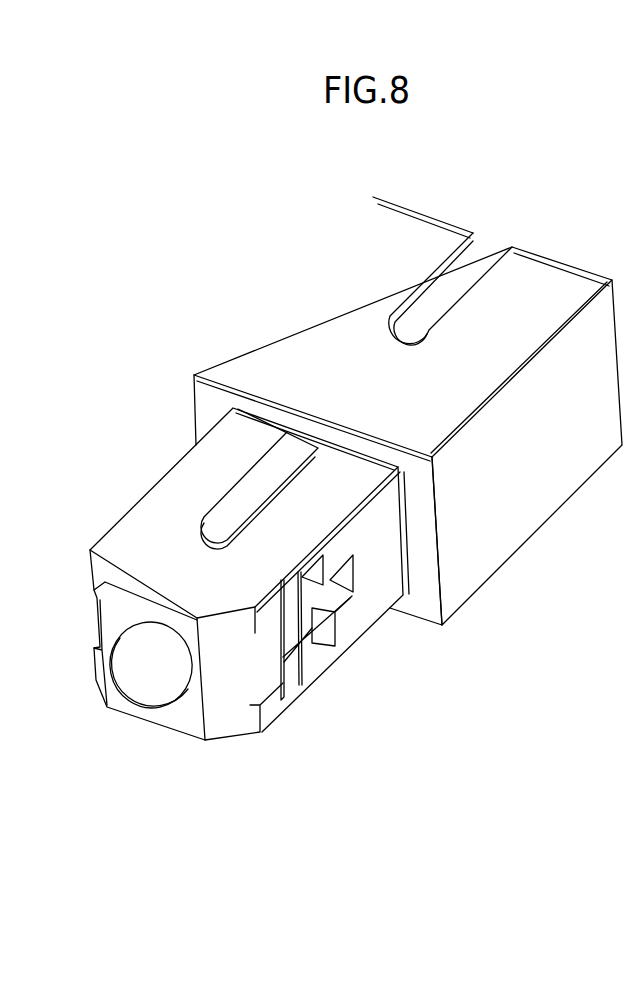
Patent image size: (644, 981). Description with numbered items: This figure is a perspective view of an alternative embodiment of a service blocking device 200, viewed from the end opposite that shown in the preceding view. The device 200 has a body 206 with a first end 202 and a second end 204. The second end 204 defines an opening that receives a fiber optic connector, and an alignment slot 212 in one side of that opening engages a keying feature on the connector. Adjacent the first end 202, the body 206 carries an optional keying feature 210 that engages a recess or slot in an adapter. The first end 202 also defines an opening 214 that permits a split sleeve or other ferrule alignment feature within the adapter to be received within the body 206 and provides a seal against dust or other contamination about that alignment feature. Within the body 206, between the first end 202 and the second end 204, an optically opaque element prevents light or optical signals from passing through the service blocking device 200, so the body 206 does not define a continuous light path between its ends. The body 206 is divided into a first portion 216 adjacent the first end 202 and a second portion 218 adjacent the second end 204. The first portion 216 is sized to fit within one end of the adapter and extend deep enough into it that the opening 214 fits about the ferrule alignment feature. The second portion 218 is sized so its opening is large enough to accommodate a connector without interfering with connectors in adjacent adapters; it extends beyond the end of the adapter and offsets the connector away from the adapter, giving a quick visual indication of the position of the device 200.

The service blocking device 200 is at (334, 211).
The first end 202 is at (108, 608).
The second end 204 is at (558, 272).
The body 206 is at (275, 327).
The keying feature 210 is at (231, 512).
The alignment slot 212 is at (477, 263).
The opening 214 is at (143, 705).
The first portion 216 is at (352, 626).
The second portion 218 is at (533, 477).